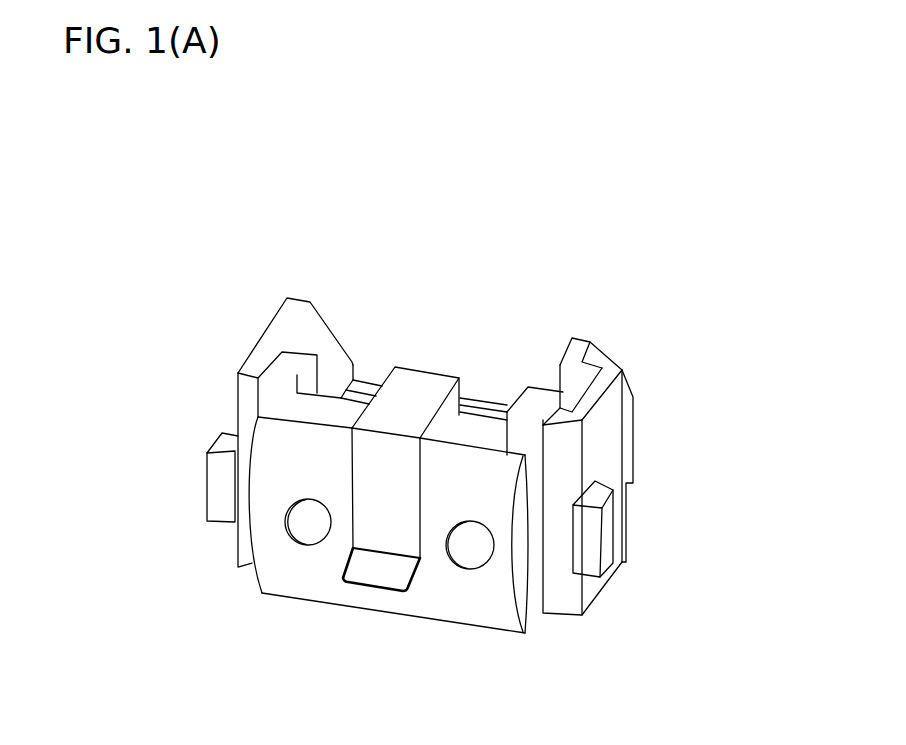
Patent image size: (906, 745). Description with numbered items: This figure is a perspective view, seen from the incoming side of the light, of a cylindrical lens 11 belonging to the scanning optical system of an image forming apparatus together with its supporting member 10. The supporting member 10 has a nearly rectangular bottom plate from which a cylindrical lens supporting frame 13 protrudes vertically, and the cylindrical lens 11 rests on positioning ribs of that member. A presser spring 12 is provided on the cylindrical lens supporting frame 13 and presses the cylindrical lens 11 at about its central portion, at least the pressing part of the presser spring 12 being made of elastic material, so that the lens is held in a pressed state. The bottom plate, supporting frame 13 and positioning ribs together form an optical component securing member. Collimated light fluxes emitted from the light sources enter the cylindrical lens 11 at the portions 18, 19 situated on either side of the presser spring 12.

The supporting member 10 is at (643, 280).
The cylindrical lens 11 is at (484, 612).
The presser spring 12 is at (420, 385).
The cylindrical lens supporting frame 13 is at (280, 318).
The light flux entry portion 18 is at (307, 528).
The light flux entry portion 19 is at (463, 555).